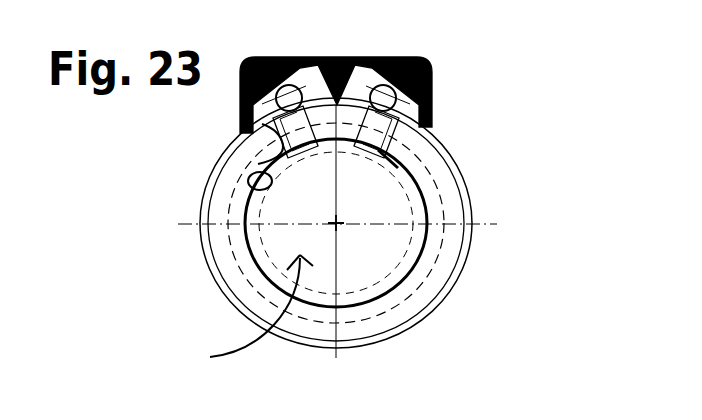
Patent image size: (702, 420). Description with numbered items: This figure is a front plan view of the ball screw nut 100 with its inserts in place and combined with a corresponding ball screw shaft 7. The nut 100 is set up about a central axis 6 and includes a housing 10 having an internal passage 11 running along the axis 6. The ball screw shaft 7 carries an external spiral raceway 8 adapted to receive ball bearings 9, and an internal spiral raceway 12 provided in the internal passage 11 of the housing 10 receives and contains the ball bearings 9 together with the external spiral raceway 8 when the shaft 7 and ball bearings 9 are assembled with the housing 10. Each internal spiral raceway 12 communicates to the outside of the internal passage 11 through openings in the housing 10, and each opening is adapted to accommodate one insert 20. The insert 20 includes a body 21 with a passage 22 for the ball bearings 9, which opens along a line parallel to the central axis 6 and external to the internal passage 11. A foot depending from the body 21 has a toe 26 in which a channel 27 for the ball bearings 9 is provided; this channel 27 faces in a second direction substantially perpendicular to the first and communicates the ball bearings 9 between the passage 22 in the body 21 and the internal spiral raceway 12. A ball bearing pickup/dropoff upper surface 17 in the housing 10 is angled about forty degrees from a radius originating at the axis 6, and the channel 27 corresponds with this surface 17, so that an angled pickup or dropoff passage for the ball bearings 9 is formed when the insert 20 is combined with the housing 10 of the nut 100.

The ball screw nut 100 is at (160, 149).
The insert 20 is at (240, 122).
The ball bearing pickup/dropoff upper surface 17 is at (258, 164).
The ball bearings 9 is at (248, 183).
The internal spiral raceway 12 is at (240, 232).
The external spiral raceway 8 is at (258, 240).
The internal passage 11 is at (241, 316).
The ball screw shaft 7 is at (321, 211).
The toe 26 is at (388, 162).
The channel 27 is at (385, 160).
The housing 10 is at (468, 178).
The passage 22 is at (400, 97).
The body 21 is at (416, 103).
The central axis 6 is at (337, 223).